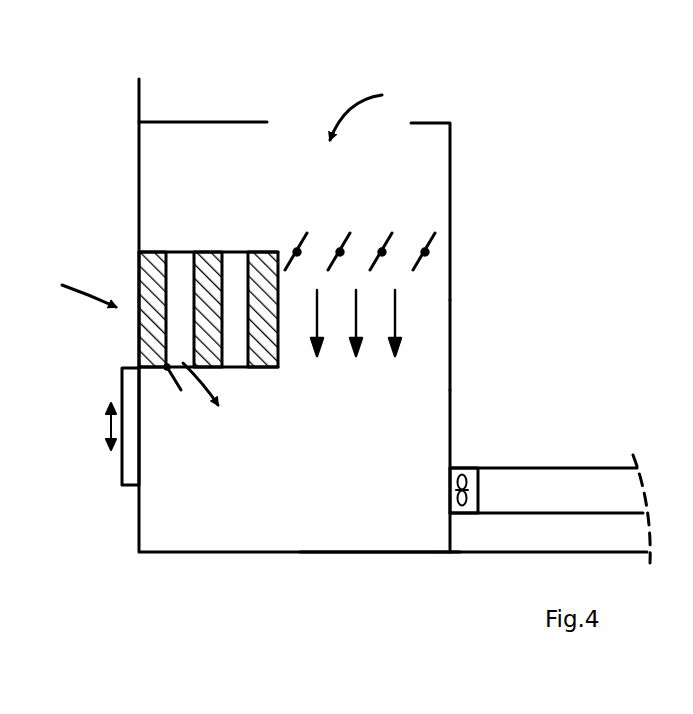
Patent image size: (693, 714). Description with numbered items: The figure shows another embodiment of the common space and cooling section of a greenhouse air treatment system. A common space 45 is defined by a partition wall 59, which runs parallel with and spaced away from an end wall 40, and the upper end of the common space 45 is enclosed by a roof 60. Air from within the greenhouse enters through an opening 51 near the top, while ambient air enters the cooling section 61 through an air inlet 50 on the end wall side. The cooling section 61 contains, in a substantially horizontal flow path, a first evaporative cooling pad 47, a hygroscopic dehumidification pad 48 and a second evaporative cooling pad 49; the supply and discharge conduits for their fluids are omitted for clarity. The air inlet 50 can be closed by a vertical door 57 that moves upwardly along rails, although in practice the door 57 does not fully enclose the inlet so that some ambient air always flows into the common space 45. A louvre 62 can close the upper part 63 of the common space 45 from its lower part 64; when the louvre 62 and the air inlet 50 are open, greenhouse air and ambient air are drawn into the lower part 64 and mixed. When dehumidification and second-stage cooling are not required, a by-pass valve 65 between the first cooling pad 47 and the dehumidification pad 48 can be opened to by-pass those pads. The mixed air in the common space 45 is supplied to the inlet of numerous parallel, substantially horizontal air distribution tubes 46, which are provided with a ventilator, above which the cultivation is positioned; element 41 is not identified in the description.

The end wall 40 is at (139, 105).
The housing bottom wall corner 41 is at (442, 553).
The common space 45 is at (393, 540).
The air distribution tubes 46 is at (575, 488).
The first evaporative cooling pad 47 is at (155, 252).
The hygroscopic dehumidification pad 48 is at (207, 253).
The second evaporative cooling pad 49 is at (260, 253).
The air inlet 50 is at (139, 320).
The opening 51 is at (372, 130).
The vertical door 57 is at (128, 458).
The partition wall 59 is at (450, 371).
The roof 60 is at (218, 122).
The cooling section 61 is at (177, 282).
The louvre 62 is at (433, 242).
The upper part 63 is at (440, 168).
The lower part 64 is at (438, 407).
The by-pass valve 65 is at (180, 390).